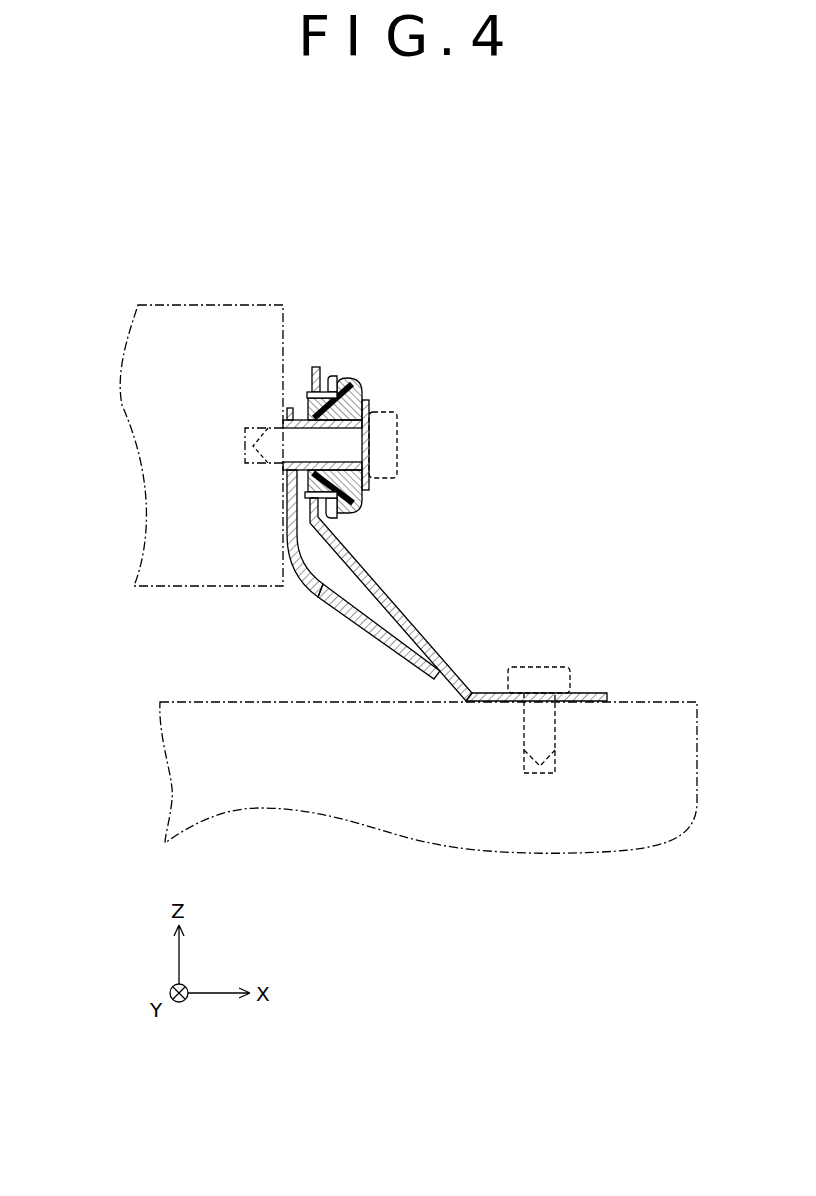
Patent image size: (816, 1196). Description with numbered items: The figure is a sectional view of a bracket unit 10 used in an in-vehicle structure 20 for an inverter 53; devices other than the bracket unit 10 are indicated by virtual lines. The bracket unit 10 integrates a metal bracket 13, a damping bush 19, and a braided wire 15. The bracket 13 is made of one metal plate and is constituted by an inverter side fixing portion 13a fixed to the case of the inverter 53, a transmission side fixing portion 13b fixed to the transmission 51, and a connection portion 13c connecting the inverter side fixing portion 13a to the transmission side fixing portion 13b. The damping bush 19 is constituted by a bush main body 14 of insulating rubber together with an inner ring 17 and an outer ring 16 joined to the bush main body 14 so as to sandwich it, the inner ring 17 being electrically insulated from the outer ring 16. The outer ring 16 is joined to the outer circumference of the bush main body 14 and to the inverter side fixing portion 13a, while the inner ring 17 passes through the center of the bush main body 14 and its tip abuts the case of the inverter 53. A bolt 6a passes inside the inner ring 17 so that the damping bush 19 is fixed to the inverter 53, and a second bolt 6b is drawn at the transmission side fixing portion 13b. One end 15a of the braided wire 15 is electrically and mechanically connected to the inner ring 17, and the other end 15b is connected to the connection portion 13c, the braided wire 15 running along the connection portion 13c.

The bracket unit 10 is at (309, 297).
The bracket 13 is at (366, 563).
The inverter side fixing portion 13a is at (315, 367).
The transmission side fixing portion 13b is at (470, 692).
The connection portion 13c is at (382, 591).
The bush main body 14 is at (355, 385).
The braided wire 15 is at (338, 598).
The one end of braided wire 15a is at (290, 490).
The other end of braided wire 15b is at (418, 664).
The outer ring 16 is at (337, 376).
The inner ring 17 is at (367, 400).
The damping bush 19 is at (467, 313).
The in-vehicle structure 20 is at (577, 418).
The transmission 51 is at (658, 750).
The inverter 53 is at (163, 315).
The bolt 6a is at (397, 427).
The second bolt 6b is at (532, 667).